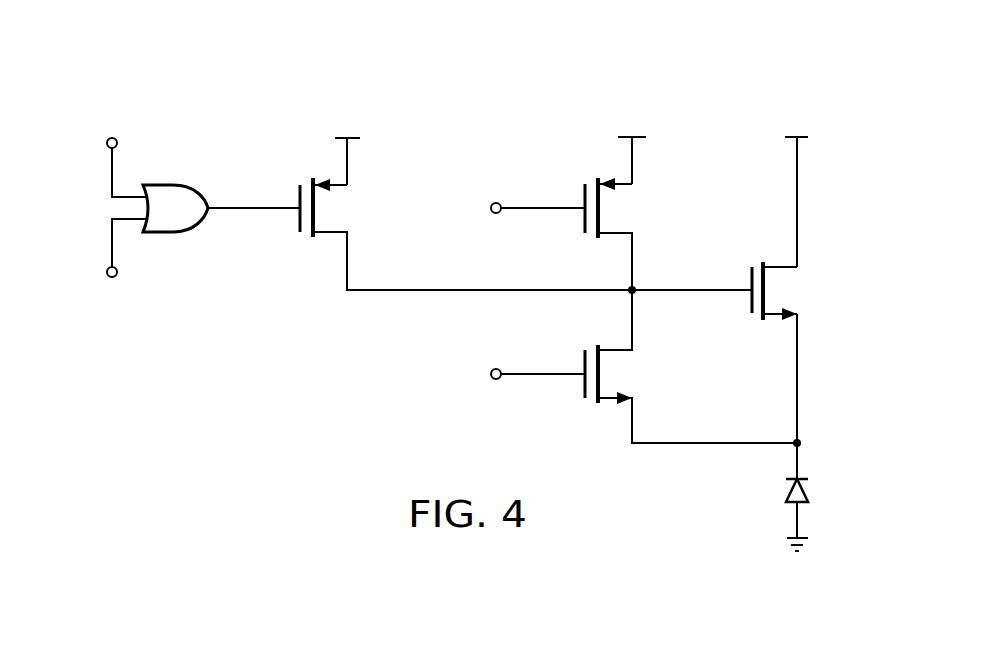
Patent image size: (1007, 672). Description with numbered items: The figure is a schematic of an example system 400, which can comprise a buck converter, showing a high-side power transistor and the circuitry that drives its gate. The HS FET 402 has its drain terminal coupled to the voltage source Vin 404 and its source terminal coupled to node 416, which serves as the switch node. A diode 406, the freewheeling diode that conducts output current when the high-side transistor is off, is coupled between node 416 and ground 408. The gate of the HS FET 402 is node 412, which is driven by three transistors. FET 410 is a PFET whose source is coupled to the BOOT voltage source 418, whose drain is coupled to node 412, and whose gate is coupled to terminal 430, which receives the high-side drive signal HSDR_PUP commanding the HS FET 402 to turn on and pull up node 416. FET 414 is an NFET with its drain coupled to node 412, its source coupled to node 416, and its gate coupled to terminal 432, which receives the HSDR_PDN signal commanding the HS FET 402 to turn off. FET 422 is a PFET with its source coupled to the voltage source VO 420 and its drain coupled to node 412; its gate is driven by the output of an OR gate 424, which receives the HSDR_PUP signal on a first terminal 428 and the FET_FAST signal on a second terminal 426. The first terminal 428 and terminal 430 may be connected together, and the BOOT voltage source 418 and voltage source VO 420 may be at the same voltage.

The system 400 is at (417, 72).
The HS FET 402 is at (750, 283).
The voltage source Vin 404 is at (806, 140).
The diode 406 is at (812, 490).
The ground 408 is at (812, 545).
The FET 410 is at (583, 196).
The node 412 is at (637, 296).
The FET 414 is at (583, 360).
The node 416 is at (795, 439).
The BOOT voltage source 418 is at (640, 140).
The voltage source VO 420 is at (338, 140).
The FET 422 is at (298, 196).
The OR gate 424 is at (185, 233).
The second terminal 426 is at (107, 268).
The first terminal 428 is at (108, 147).
The terminal 430 is at (495, 215).
The terminal 432 is at (496, 381).